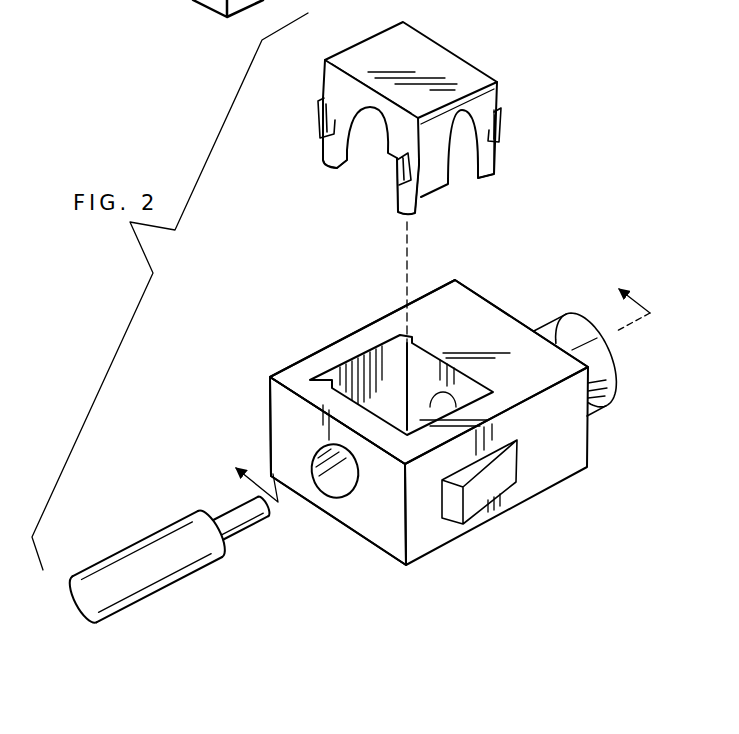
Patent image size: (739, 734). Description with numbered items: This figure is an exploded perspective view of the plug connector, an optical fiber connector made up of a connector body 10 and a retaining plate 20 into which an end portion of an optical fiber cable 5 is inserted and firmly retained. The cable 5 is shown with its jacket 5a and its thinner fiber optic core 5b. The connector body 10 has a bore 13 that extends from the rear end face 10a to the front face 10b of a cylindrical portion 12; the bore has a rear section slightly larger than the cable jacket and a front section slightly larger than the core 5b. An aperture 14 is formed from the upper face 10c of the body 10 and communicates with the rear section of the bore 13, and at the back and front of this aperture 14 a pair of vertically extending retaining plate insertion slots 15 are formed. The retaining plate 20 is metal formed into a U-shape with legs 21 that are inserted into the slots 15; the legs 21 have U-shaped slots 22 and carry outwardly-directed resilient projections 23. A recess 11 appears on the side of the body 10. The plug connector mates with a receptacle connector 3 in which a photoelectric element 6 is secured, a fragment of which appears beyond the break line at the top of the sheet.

The receptacle connector 3 is at (434, 386).
The optical fiber cable 5 is at (181, 561).
The plug body 5a is at (212, 558).
The fiber optic core 5b is at (253, 528).
The photoelectric element 6 is at (203, 14).
The connector body 10 is at (566, 494).
The rear end face 10a is at (388, 522).
The front face 10b is at (615, 357).
The upper face 10c is at (468, 320).
The rectangular recess 11 is at (470, 508).
The cylindrical portion 12 is at (607, 390).
The bore 13 is at (338, 482).
The aperture 14 is at (380, 387).
The retaining plate insertion slots 15 is at (332, 377).
The retaining plate 20 is at (472, 47).
The legs 21 is at (340, 83).
The U-shaped slots 22 is at (382, 137).
The resilient projections 23 is at (320, 110).